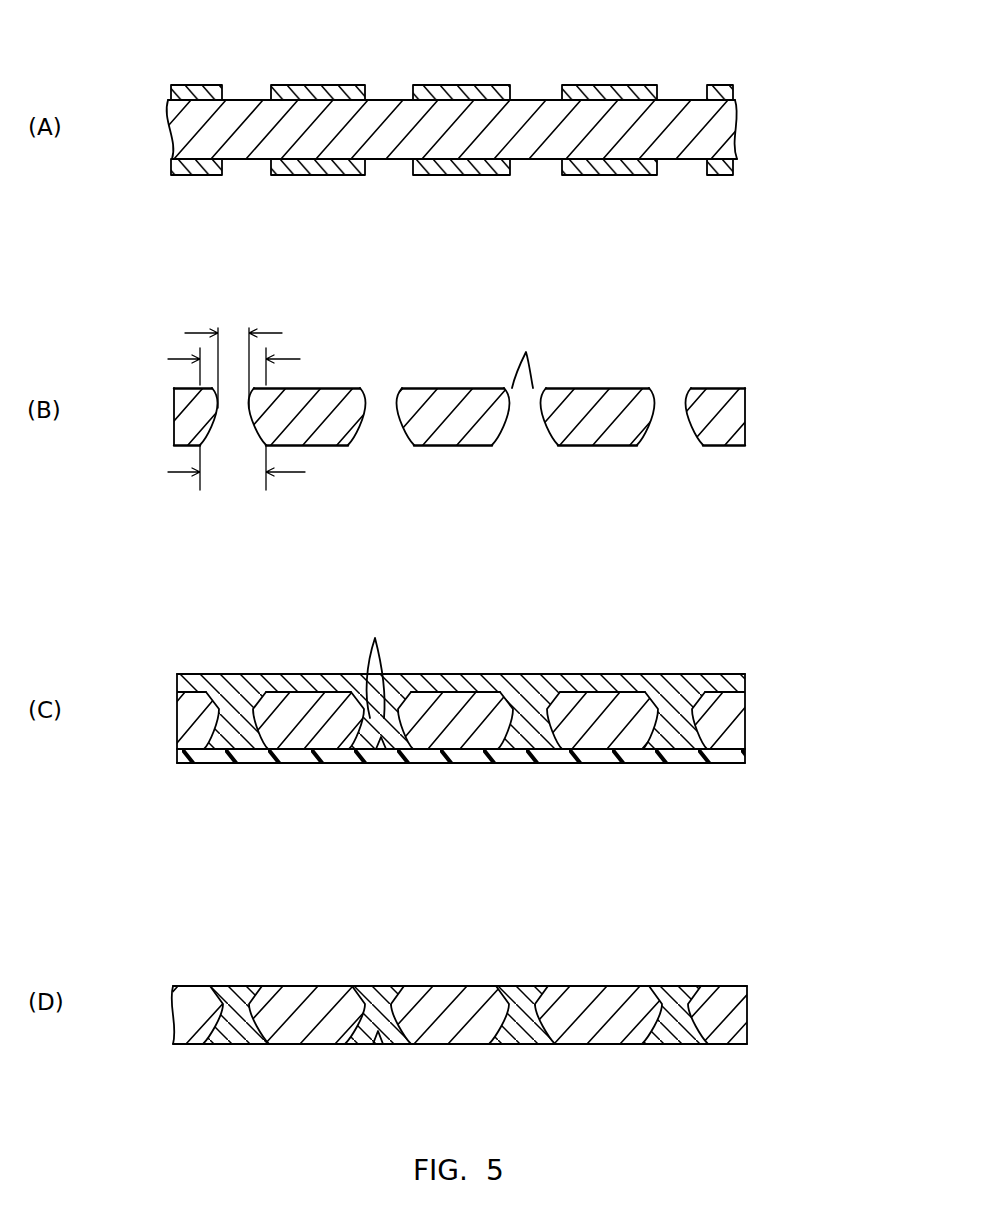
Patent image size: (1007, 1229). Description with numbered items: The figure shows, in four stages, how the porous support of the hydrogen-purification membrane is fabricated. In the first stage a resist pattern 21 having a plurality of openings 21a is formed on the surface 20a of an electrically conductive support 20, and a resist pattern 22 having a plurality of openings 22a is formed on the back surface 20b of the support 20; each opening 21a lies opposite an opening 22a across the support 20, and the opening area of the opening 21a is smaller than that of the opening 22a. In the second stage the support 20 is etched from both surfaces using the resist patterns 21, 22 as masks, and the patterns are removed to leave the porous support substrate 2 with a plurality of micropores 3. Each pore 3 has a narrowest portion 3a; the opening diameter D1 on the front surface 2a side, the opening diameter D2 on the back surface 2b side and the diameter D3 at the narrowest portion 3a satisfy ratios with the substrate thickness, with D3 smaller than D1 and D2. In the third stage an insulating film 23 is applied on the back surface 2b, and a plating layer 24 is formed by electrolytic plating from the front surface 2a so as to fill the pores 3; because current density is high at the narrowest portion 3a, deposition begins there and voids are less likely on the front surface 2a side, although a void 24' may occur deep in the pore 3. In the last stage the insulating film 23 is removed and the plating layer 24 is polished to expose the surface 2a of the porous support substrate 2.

The electrically conductive support 20 is at (722, 125).
The surface of electrically conductive support 20a is at (675, 97).
The back surface of electrically conductive support 20b is at (688, 160).
The resist pattern 21 is at (489, 72).
The opening 21a is at (253, 93).
The resist pattern 22 is at (442, 179).
The opening 22a is at (247, 170).
The porous support substrate 2 is at (741, 415).
The front surface of porous support substrate 2a is at (727, 385).
The back surface of porous support substrate 2b is at (713, 447).
The micropore 3 is at (378, 428).
The narrowest portion 3a is at (216, 402).
The opening diameter on front surface side D1 is at (253, 357).
The opening diameter on back surface side D2 is at (235, 468).
The opening diameter at narrowest portion D3 is at (232, 332).
The insulating film 23 is at (663, 753).
The plating layer 24 is at (461, 827).
The void 24' is at (358, 921).